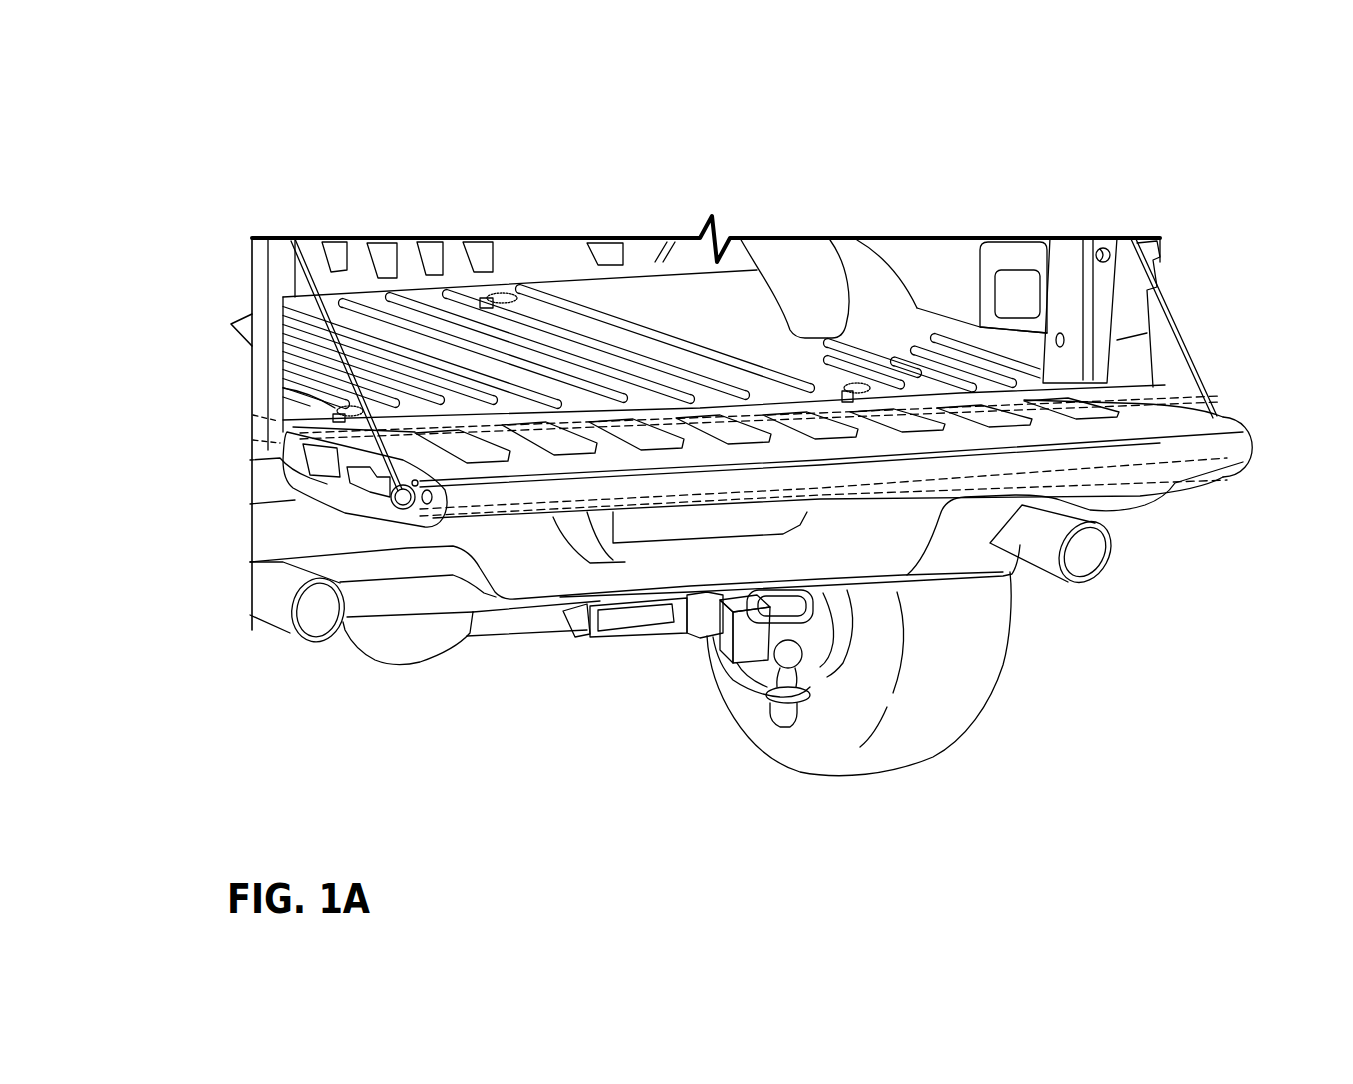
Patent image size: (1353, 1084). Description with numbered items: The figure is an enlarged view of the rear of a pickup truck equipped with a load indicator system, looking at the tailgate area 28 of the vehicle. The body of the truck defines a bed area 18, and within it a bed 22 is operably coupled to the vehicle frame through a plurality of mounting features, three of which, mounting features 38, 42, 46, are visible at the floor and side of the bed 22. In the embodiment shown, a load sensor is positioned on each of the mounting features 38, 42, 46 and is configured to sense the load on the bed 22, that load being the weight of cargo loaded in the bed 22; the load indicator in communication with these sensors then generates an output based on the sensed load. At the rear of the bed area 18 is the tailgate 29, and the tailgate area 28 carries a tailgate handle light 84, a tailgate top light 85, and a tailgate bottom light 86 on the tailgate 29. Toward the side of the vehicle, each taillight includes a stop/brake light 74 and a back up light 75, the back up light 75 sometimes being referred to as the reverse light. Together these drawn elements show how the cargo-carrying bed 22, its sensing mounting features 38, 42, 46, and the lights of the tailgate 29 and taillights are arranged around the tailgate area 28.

The bed area 18 is at (778, 270).
The bed 22 is at (571, 372).
The tailgate area 28 is at (1118, 412).
The tailgate 29 is at (1150, 440).
The mounting feature 38 is at (501, 296).
The mounting feature 42 is at (283, 379).
The mounting feature 46 is at (860, 384).
The stop/brake light 74 is at (1160, 267).
The back up light 75 is at (1160, 247).
The tailgate handle light 84 is at (780, 433).
The tailgate top light 85 is at (503, 520).
The tailgate bottom light 86 is at (352, 487).